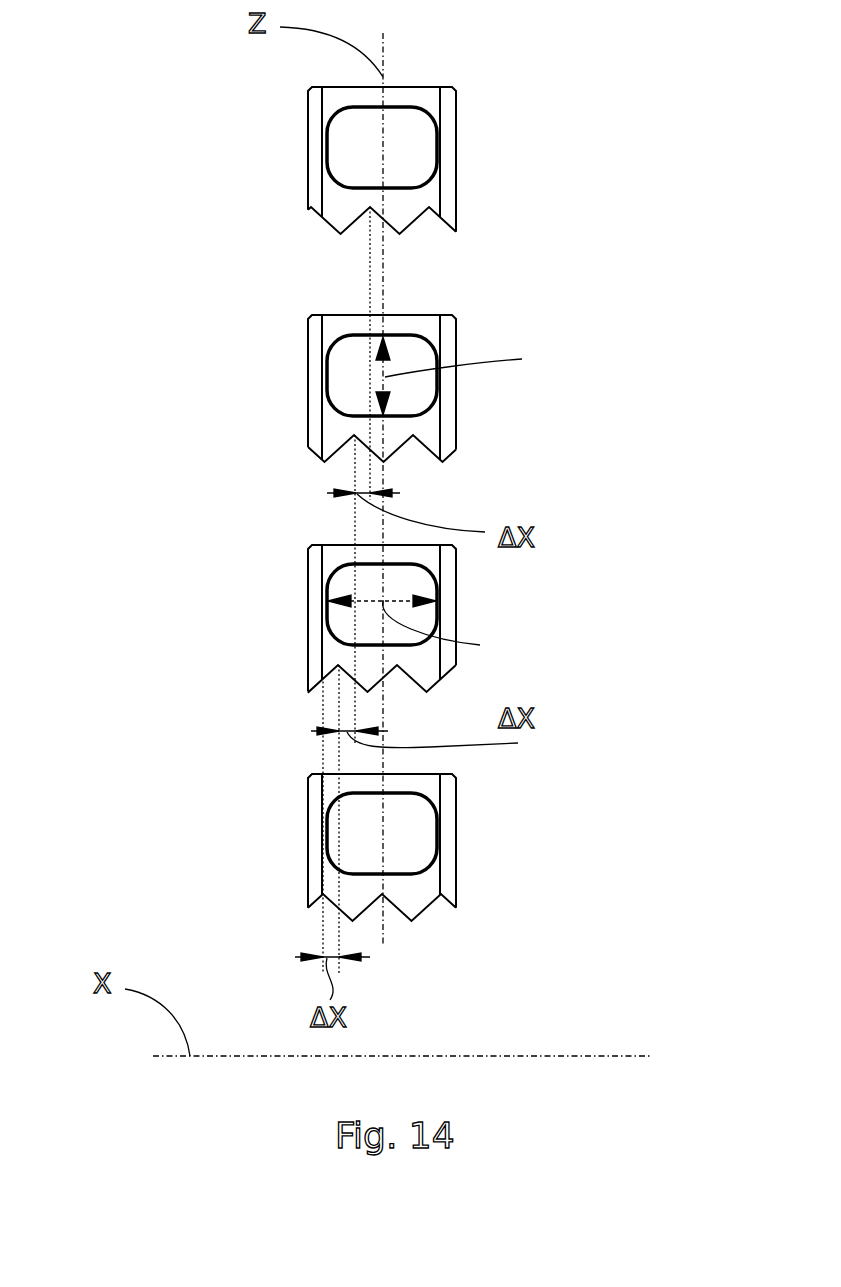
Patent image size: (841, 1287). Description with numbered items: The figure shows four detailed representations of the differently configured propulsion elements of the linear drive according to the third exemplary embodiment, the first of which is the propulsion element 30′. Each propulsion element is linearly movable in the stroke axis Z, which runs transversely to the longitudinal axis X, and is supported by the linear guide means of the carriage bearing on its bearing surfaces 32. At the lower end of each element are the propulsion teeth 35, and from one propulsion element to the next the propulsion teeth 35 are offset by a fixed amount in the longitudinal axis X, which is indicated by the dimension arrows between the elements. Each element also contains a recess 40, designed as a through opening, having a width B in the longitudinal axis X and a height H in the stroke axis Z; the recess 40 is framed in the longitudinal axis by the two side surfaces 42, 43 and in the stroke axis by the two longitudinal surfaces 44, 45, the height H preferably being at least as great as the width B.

The propulsion element 30′ is at (253, 154).
The bearing surface 32 is at (308, 120).
The propulsion tooth 35 is at (337, 221).
The recess 40 is at (383, 108).
The side surface 42 is at (327, 833).
The side surface 43 is at (437, 832).
The longitudinal surface 44 is at (387, 877).
The longitudinal surface 45 is at (378, 793).